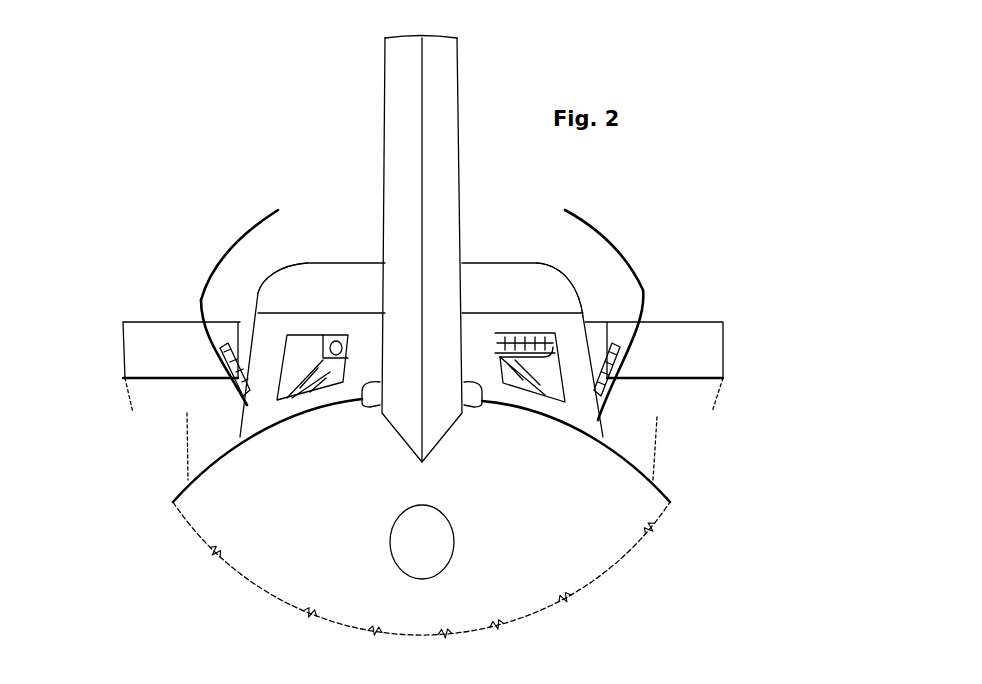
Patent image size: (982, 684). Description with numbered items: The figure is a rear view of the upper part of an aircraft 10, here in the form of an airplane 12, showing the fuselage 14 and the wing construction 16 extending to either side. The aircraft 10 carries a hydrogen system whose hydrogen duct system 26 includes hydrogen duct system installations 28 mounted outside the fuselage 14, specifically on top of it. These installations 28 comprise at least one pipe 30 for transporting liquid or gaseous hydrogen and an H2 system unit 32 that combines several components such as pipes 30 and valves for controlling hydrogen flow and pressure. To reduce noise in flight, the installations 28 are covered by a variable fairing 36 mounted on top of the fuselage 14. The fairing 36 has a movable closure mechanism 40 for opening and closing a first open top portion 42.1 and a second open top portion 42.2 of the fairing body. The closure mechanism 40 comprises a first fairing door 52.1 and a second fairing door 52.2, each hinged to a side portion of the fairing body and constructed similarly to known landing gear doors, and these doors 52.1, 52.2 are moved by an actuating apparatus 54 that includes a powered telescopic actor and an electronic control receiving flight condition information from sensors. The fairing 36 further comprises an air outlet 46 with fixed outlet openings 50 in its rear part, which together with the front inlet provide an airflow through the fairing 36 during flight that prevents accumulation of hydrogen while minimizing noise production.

The aircraft 10 is at (303, 249).
The airplane 12 is at (422, 249).
The fuselage 14 is at (222, 512).
The wing construction 16 is at (685, 350).
The hydrogen duct system 26 is at (534, 378).
The hydrogen duct system installations 28 is at (312, 360).
The pipe 30 is at (300, 385).
The H2 system unit 32 is at (312, 347).
The variable fairing 36 is at (247, 205).
The movable closure mechanism 40 is at (197, 262).
The first open top portion 42.1 is at (522, 248).
The second open top portion 42.2 is at (305, 260).
The air outlet 46 is at (327, 398).
The fixed outlet opening 50 is at (318, 335).
The first fairing door 52.1 is at (627, 252).
The second fairing door 52.2 is at (237, 238).
The actuating apparatus 54 is at (533, 377).